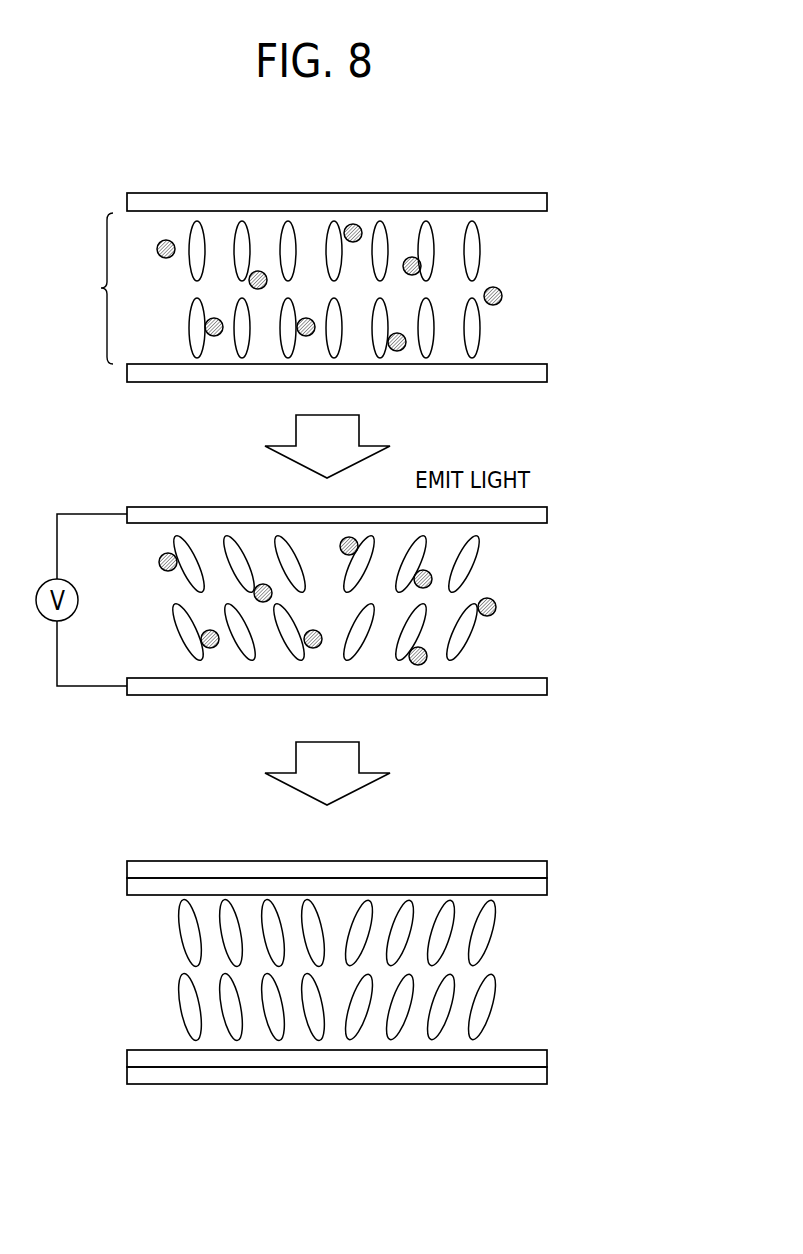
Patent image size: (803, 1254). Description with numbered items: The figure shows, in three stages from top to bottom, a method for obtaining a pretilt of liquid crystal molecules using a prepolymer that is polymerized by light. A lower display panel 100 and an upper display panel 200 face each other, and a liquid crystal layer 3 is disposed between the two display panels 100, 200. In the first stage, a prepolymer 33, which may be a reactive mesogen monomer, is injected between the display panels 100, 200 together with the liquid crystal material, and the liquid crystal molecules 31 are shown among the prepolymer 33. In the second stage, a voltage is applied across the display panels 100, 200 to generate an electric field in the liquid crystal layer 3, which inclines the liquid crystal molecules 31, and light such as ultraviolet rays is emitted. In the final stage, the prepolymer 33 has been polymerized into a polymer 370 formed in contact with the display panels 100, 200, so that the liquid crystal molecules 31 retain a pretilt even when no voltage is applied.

The liquid crystal layer 3 is at (313, 287).
The liquid crystal molecules 31 is at (480, 248).
The prepolymer 33 is at (502, 296).
The lower display panel 100 is at (127, 373).
The upper display panel 200 is at (127, 203).
The polymer 370 is at (547, 886).